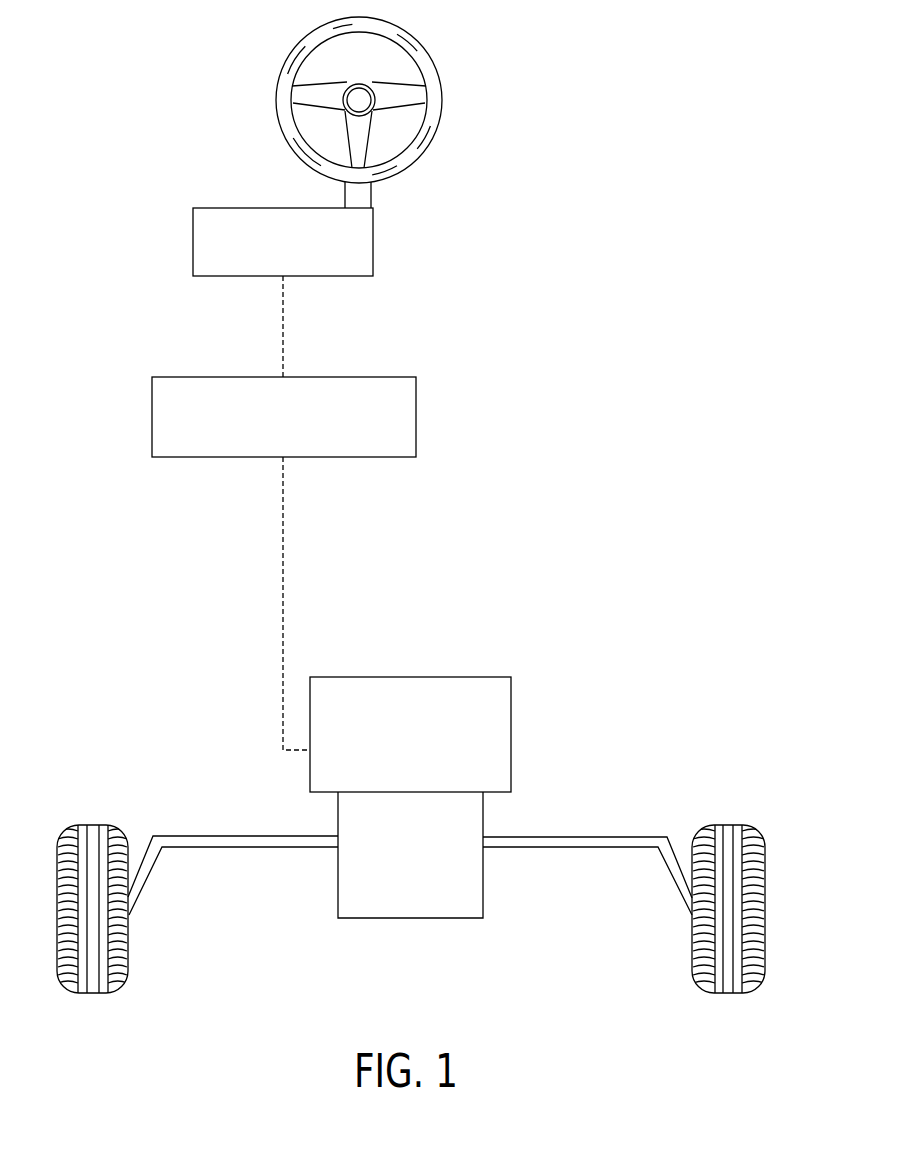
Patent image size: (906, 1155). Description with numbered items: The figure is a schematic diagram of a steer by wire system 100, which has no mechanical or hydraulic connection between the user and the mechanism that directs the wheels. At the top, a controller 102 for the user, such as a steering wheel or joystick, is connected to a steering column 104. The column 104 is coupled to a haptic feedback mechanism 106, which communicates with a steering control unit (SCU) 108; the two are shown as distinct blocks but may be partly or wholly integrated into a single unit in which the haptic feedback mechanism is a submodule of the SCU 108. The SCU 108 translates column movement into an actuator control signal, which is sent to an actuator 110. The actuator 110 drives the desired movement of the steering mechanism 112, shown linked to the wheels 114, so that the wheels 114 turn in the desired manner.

The steer by wire system 100 is at (684, 105).
The controller 102 is at (441, 97).
The steering column 104 is at (373, 193).
The haptic feedback mechanism 106 is at (373, 243).
The steering control unit (SCU) 108 is at (416, 417).
The actuator 110 is at (410, 677).
The steering mechanism 112 is at (410, 918).
The wheels 114 is at (92, 823).